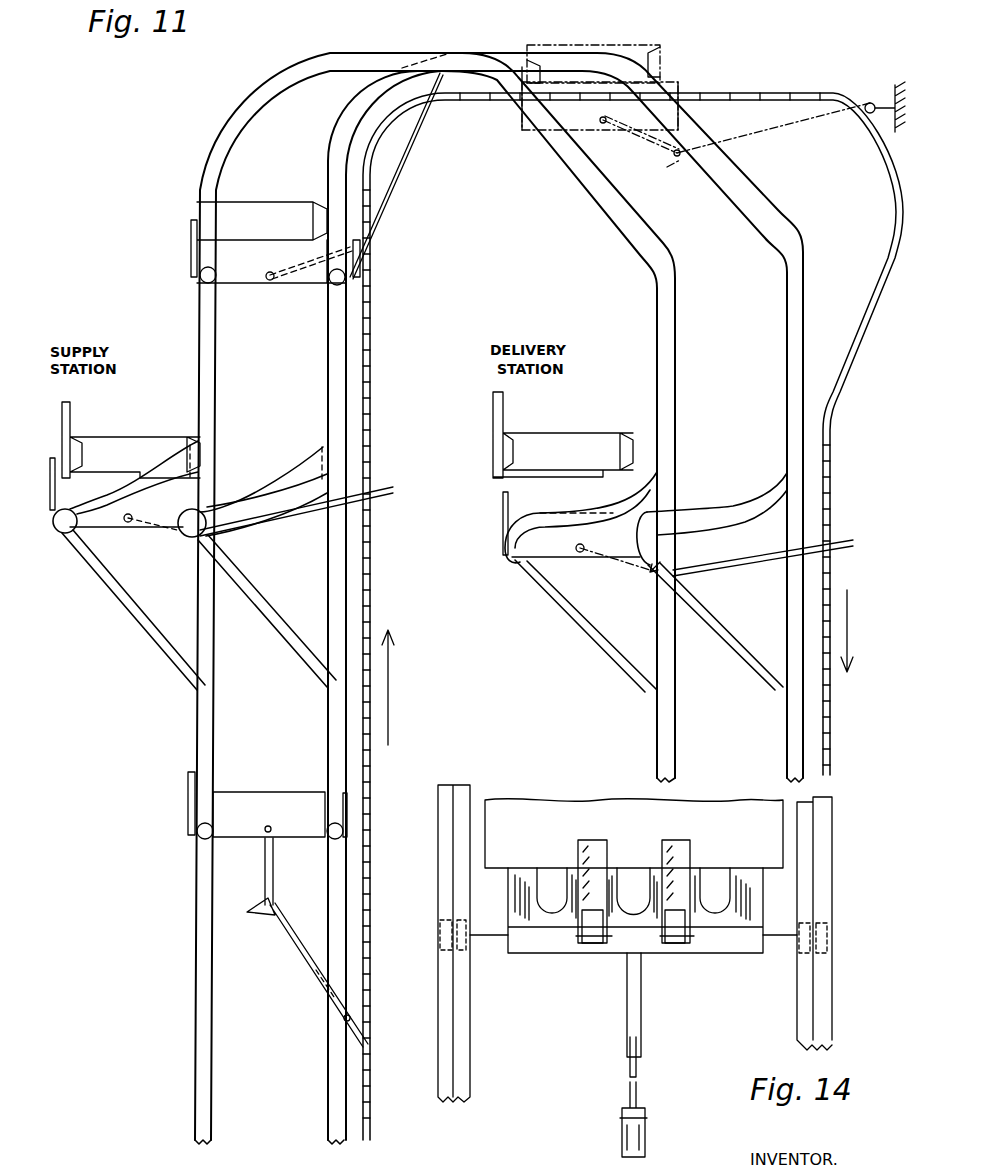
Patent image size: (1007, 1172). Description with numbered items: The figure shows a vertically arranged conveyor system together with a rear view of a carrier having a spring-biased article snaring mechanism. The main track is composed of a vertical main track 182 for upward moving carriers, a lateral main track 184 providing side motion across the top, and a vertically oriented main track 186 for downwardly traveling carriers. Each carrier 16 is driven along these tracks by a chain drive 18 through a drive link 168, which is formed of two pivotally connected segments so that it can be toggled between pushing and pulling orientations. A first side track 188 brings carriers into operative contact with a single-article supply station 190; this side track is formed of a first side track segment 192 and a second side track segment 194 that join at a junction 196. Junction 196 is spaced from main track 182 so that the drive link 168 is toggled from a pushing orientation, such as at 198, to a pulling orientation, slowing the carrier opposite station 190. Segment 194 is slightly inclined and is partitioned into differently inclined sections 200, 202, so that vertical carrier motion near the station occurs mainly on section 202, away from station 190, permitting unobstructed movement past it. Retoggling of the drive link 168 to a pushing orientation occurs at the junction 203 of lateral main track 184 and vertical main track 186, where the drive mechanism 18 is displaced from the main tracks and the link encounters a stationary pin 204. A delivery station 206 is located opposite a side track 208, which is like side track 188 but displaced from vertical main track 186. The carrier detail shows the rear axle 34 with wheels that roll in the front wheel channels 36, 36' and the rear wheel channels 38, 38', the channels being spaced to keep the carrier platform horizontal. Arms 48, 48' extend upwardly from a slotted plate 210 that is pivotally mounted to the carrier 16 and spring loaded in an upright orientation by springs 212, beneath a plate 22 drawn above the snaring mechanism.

In FIG. 11, the carrier 16 is at (532, 137).
In FIG. 11, the chain drive 18 is at (773, 93).
In FIG. 14, the plate 22 is at (510, 802).
In FIG. 14, the rear axle 34 is at (492, 940).
In FIG. 14, the front wheel channel 36 is at (789, 923).
In FIG. 14, the front wheel channel 36' is at (490, 943).
In FIG. 14, the rear wheel channel 38 is at (841, 920).
In FIG. 14, the rear wheel channel 38' is at (433, 903).
In FIG. 14, the arm 48 is at (702, 880).
In FIG. 14, the arm 48' is at (572, 880).
In FIG. 11, the drive link 168 is at (390, 188).
In FIG. 14, the drive link 168 is at (642, 995).
In FIG. 11, the vertical main track 182 is at (190, 935).
In FIG. 11, the lateral main track 184 is at (448, 52).
In FIG. 11, the vertical main track 186 is at (657, 732).
In FIG. 11, the first side track 188 is at (87, 618).
In FIG. 11, the supply station 190 is at (70, 417).
In FIG. 11, the first side track segment 192 is at (140, 634).
In FIG. 11, the second side track segment 194 is at (258, 482).
In FIG. 11, the junction 196 is at (168, 551).
In FIG. 11, the pushing orientation 198 is at (422, 1067).
In FIG. 11, the inclined section 200 is at (230, 495).
In FIG. 11, the inclined section 202 is at (300, 473).
In FIG. 11, the junction 203 is at (776, 187).
In FIG. 11, the stationary pin 204 is at (870, 103).
In FIG. 11, the delivery station 206 is at (503, 412).
In FIG. 11, the side track 208 is at (567, 640).
In FIG. 14, the slotted plate 210 is at (540, 958).
In FIG. 14, the spring 212 is at (590, 950).